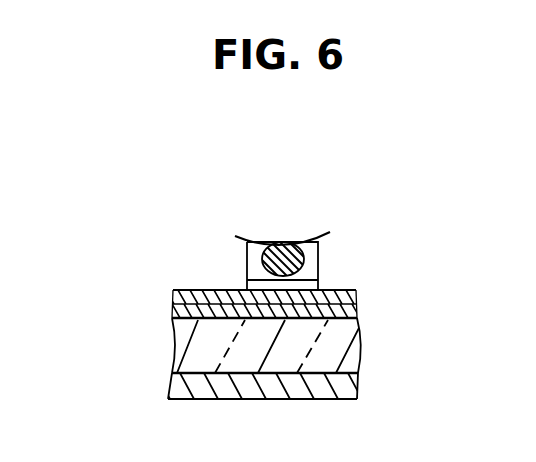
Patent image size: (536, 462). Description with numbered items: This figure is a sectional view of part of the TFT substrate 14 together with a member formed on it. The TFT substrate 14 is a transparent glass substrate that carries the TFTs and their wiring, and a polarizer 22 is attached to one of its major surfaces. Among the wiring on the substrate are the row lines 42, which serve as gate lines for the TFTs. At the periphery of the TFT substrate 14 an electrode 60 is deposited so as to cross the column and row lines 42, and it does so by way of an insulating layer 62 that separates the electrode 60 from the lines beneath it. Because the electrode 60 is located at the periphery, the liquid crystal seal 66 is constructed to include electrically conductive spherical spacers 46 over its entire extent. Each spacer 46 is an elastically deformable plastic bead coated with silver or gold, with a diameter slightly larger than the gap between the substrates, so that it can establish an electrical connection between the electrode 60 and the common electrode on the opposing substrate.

The TFT substrate 14 is at (356, 360).
The polarizer 22 is at (350, 385).
The row lines 42 is at (172, 310).
The electrically conductive spherical spacer 46 is at (279, 245).
The electrode 60 is at (247, 289).
The insulating layer 62 is at (349, 303).
The liquid crystal seal 66 is at (326, 253).